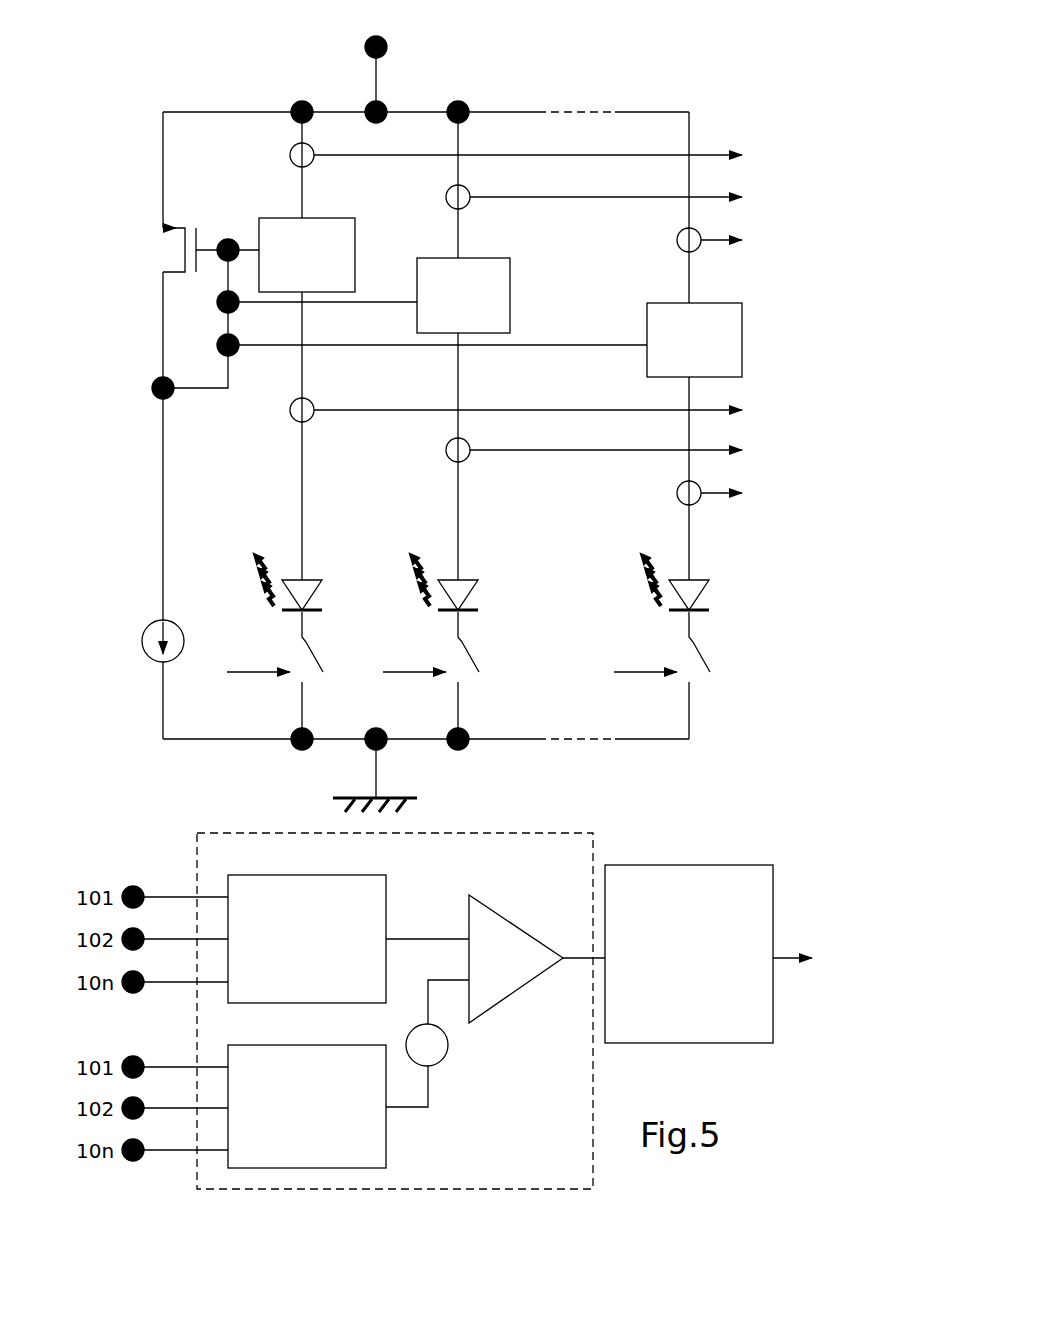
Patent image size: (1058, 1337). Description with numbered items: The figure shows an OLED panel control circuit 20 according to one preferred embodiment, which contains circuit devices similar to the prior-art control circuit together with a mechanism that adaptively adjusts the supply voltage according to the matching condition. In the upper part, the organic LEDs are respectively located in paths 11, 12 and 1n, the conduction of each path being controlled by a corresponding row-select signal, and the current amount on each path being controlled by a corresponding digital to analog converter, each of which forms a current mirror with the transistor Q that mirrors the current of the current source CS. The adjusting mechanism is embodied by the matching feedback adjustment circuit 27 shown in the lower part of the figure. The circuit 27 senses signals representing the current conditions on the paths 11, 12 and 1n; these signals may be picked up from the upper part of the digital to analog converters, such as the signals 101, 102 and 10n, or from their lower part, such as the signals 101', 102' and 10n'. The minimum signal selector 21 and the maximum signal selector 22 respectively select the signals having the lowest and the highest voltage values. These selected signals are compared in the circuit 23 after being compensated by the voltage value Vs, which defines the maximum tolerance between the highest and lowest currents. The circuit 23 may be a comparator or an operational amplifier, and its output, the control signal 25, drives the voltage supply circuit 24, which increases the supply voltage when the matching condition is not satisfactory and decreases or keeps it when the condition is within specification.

The OLED panel control circuit 20 is at (704, 70).
The signal 101 is at (546, 155).
The signal 102 is at (624, 197).
The signal 10n is at (741, 240).
The signal 101' is at (549, 410).
The signal 102' is at (627, 450).
The signal 10n' is at (745, 493).
The path 11 is at (304, 524).
The path 12 is at (460, 534).
The path 1n is at (692, 552).
The minimum signal selector 21 is at (291, 1157).
The maximum signal selector 22 is at (291, 990).
The circuit 23 is at (518, 972).
The voltage supply circuit 24 is at (700, 998).
The control signal 25 is at (585, 955).
The matching feedback adjustment circuit 27 is at (553, 833).